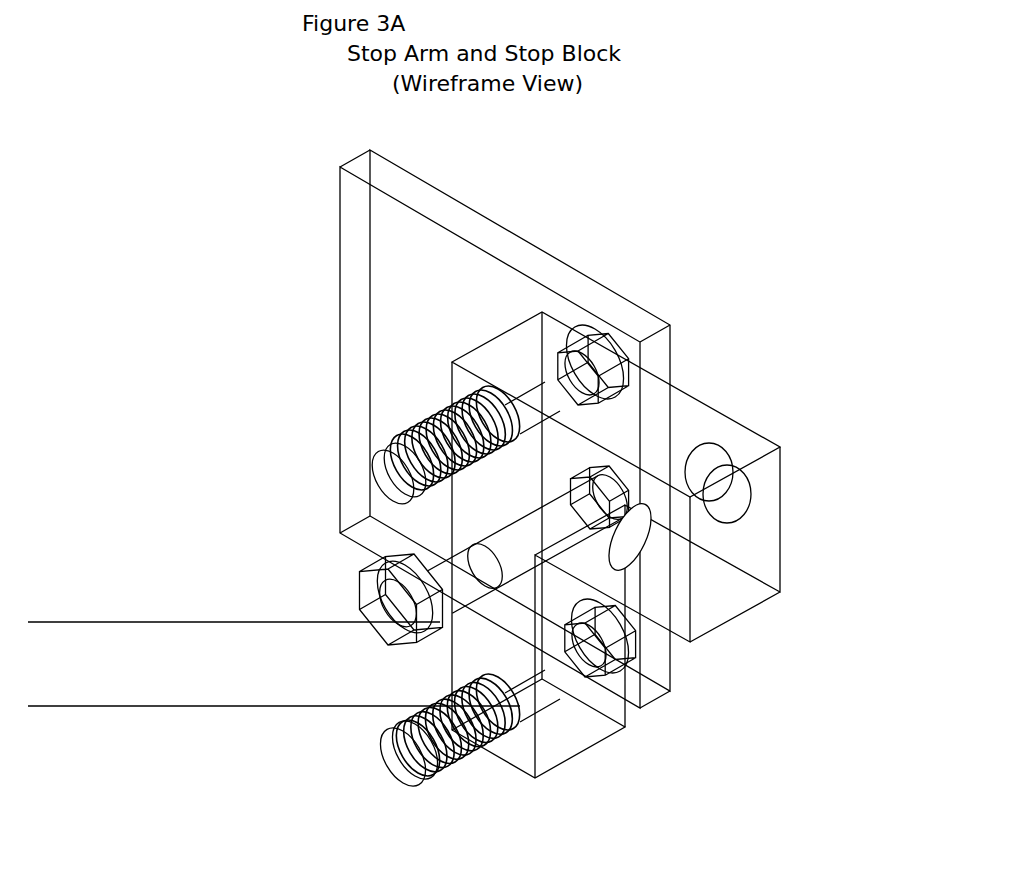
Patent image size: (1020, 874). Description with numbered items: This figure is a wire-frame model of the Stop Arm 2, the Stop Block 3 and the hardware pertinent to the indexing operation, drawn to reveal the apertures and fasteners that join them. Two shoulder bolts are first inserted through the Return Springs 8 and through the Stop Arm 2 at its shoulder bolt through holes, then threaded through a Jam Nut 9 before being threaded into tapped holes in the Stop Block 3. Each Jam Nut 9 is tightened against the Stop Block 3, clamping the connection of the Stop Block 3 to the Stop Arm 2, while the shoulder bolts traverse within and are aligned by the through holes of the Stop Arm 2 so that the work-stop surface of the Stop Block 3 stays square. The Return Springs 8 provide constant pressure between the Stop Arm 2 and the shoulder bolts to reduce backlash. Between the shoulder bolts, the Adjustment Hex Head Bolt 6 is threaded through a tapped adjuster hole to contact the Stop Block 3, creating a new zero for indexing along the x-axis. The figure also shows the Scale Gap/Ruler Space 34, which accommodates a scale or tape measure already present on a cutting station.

The stop arm 2 is at (787, 446).
The stop block 3 is at (367, 333).
The adjustment hex head bolt 6 is at (390, 610).
The return springs 8 is at (453, 780).
The jam nut 9 is at (597, 318).
The scale gap/ruler space 34 is at (48, 600).